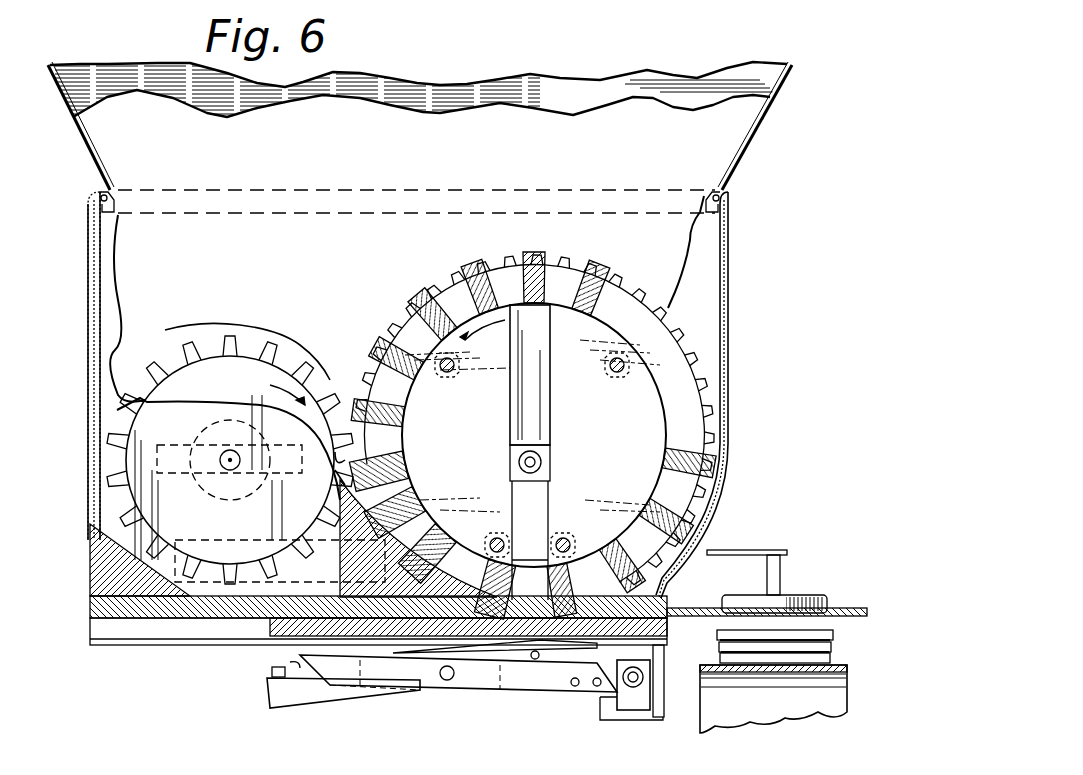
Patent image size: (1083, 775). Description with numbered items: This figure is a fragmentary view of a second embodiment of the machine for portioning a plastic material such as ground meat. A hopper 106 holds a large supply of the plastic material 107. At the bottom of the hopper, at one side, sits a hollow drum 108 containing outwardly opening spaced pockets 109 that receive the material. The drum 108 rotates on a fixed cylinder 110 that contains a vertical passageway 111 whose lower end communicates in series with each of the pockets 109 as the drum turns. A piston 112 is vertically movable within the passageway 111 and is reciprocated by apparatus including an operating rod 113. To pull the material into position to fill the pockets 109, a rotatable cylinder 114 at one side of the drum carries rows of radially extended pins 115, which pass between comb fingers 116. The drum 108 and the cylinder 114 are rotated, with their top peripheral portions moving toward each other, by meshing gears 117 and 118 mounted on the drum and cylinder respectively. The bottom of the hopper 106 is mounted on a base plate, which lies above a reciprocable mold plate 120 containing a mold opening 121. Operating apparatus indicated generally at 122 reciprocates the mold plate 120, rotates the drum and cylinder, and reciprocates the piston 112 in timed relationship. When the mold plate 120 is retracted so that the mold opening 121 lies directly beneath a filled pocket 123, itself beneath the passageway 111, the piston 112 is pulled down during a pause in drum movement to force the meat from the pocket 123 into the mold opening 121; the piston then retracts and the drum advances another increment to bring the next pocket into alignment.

The hopper 106 is at (697, 256).
The plastic material 107 is at (518, 120).
The hollow drum 108 is at (507, 300).
The pockets 109 is at (374, 403).
The fixed cylinder 110 is at (608, 441).
The vertical passageway 111 is at (507, 412).
The piston 112 is at (540, 522).
The operating rod 113 is at (548, 484).
The rotatable cylinder 114 is at (245, 390).
The radially extended pins 115 is at (196, 353).
The comb fingers 116 is at (342, 480).
The gear 117 is at (668, 378).
The gear 118 is at (130, 455).
The mold plate 120 is at (838, 596).
The mold opening 121 is at (735, 615).
The operating apparatus 122 is at (462, 692).
The filled pocket 123 is at (550, 552).